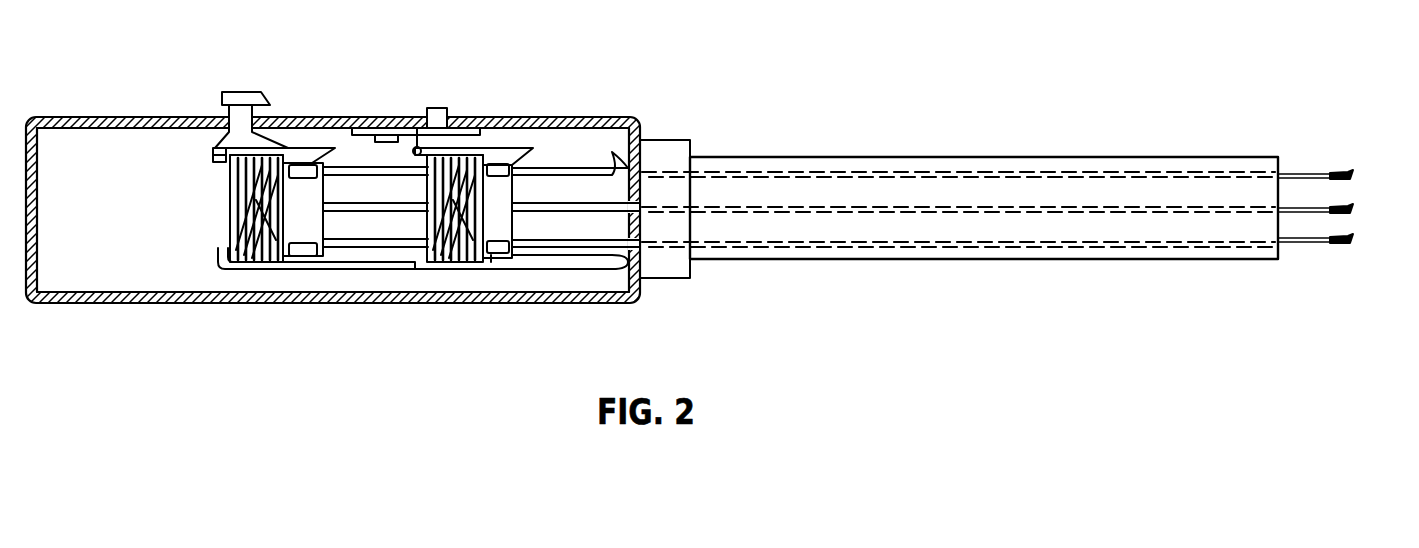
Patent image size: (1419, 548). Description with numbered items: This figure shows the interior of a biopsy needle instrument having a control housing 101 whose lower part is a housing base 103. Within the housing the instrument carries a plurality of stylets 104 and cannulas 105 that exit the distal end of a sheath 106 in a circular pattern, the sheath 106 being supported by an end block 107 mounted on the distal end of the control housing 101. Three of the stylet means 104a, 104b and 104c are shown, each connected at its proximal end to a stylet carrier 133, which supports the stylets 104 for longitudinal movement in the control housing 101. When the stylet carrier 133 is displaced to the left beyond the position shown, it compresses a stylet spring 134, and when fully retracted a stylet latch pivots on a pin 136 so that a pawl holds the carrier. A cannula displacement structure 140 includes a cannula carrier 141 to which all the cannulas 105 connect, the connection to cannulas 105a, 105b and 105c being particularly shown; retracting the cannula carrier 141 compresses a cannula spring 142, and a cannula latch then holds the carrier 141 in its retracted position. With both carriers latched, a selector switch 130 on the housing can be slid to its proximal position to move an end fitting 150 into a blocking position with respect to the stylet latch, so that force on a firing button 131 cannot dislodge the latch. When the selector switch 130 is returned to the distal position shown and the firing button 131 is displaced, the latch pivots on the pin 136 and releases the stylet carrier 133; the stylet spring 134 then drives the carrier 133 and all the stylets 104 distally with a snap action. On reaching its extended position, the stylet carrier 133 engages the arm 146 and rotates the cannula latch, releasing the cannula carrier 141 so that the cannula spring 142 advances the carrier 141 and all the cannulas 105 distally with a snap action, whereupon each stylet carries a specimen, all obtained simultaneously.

The control housing 101 is at (95, 117).
The housing base 103 is at (152, 118).
The stylets 104 is at (1362, 186).
The stylet means 104a is at (348, 151).
The stylet means 104b is at (397, 207).
The stylet means 104c is at (397, 243).
The cannulas 105 is at (1290, 162).
The cannula 105a is at (543, 164).
The cannula 105b is at (548, 189).
The cannula 105c is at (533, 244).
The sheath 106 is at (1017, 157).
The end block 107 is at (670, 140).
The selector switch 130 is at (440, 107).
The firing button 131 is at (245, 91).
The stylet carrier 133 is at (292, 230).
The stylet spring 134 is at (233, 228).
The pin 136 is at (212, 149).
The cannula displacement structure 140 is at (467, 270).
The cannula carrier 141 is at (491, 258).
The cannula spring 142 is at (438, 262).
The arm 146 is at (417, 147).
The end fitting 150 is at (357, 128).